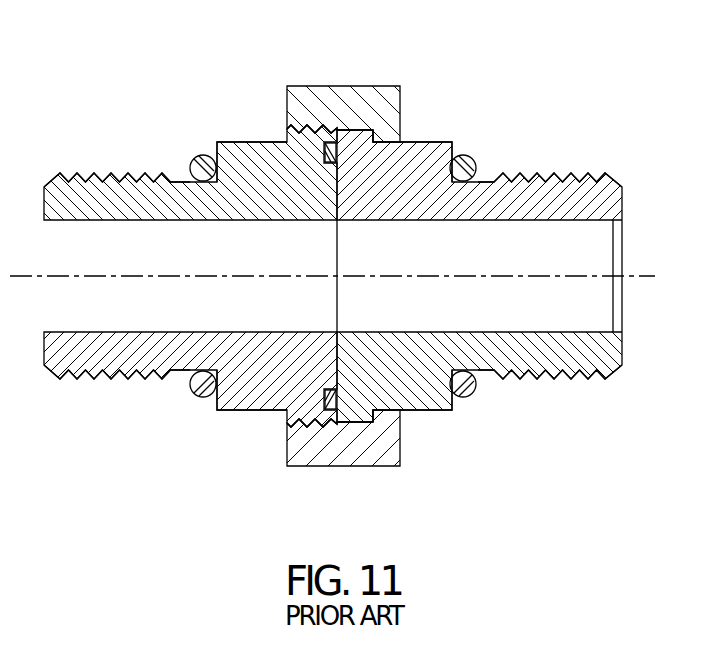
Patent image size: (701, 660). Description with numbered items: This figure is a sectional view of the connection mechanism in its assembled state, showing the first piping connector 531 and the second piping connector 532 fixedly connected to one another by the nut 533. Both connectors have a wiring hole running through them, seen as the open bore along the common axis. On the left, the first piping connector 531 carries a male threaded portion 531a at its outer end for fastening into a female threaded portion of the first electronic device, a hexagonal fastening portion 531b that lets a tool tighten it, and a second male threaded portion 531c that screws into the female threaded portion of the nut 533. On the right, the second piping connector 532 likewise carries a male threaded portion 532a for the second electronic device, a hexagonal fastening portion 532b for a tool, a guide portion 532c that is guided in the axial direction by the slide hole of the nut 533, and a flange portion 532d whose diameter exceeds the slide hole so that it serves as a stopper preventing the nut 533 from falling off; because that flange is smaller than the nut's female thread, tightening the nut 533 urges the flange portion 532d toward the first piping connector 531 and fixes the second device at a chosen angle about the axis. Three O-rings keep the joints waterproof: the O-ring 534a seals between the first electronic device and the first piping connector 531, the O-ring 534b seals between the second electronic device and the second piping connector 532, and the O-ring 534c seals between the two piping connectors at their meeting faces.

The first piping connector 531 is at (232, 443).
The male threaded portion 531a is at (128, 175).
The hexagonal fastening portion 531b is at (260, 142).
The male threaded portion 531c is at (301, 125).
The second piping connector 532 is at (445, 443).
The male threaded portion 532a is at (556, 176).
The hexagonal fastening portion 532b is at (417, 142).
The guide portion 532c is at (379, 130).
The flange portion 532d is at (355, 130).
The nut 533 is at (333, 455).
The O-ring 534a is at (202, 156).
The O-ring 534b is at (464, 156).
The O-ring 534c is at (328, 158).